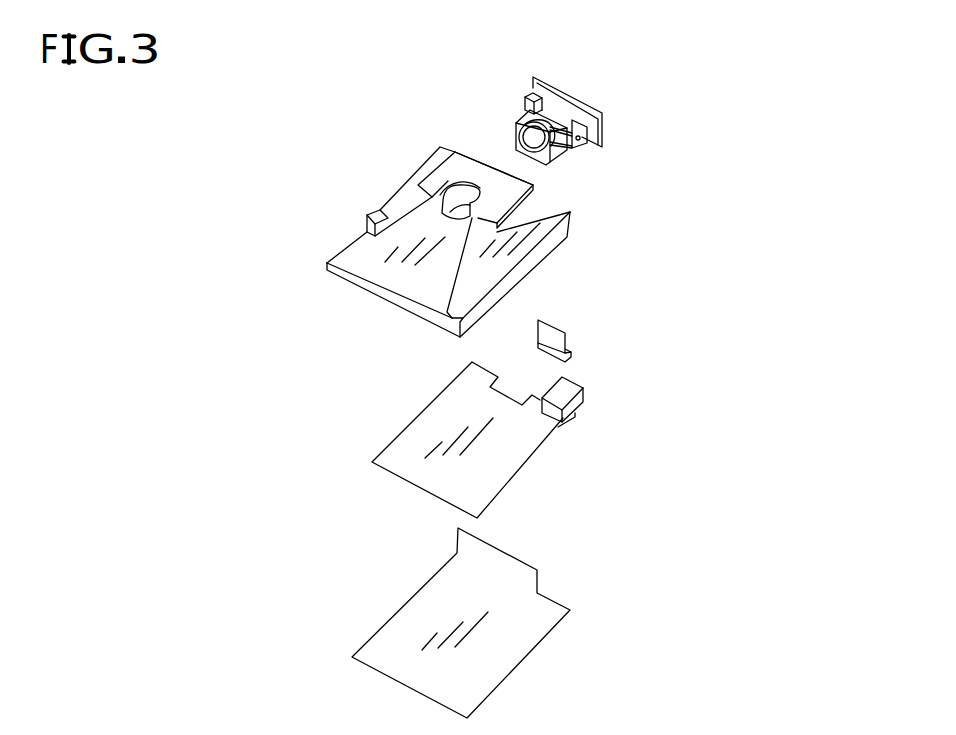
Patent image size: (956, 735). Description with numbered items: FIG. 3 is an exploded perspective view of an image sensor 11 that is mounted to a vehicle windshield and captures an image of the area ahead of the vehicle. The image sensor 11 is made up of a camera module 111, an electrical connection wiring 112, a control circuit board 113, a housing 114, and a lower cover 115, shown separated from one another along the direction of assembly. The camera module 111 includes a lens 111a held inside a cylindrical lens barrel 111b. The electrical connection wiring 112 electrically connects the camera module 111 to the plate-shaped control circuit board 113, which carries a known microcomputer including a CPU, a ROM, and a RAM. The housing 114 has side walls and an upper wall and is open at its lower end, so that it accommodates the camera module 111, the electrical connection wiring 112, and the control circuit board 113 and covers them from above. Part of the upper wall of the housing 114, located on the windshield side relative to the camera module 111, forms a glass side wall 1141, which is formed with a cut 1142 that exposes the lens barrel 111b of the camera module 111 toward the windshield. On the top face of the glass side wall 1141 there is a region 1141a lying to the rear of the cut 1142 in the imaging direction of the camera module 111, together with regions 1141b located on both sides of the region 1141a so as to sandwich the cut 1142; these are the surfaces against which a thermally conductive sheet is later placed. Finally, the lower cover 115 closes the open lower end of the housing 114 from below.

The image sensor 11 is at (752, 370).
The camera module 111 is at (592, 77).
The lens 111a is at (518, 134).
The lens barrel 111b is at (558, 138).
The electrical connection wiring 112 is at (552, 333).
The control circuit board 113 is at (517, 443).
The housing 114 is at (585, 238).
The glass side wall 1141 is at (412, 186).
The region 1141a is at (500, 207).
The regions 1141b is at (465, 188).
The cut 1142 is at (455, 210).
The lower cover 115 is at (533, 617).